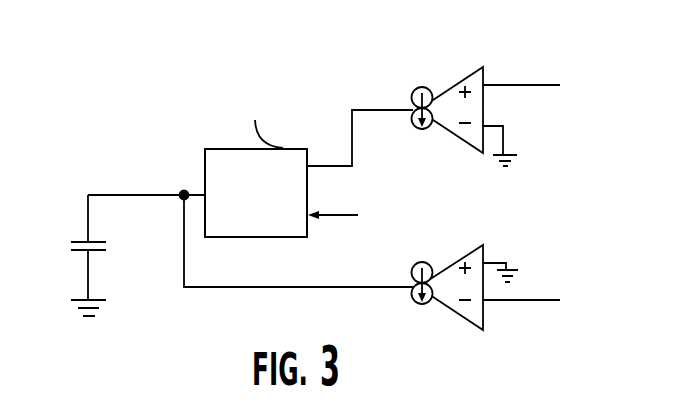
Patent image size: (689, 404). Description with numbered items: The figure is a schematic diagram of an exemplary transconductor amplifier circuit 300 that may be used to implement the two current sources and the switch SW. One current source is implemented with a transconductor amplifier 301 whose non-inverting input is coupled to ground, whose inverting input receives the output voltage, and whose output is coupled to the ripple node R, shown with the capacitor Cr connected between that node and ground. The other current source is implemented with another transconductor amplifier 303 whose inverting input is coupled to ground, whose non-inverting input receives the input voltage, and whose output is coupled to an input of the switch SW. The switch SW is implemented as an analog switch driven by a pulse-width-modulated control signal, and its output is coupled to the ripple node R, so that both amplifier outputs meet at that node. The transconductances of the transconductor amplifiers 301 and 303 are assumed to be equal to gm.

The transconductor amplifier circuit 300 is at (227, 66).
The transconductor amplifier 303 is at (448, 86).
The transconductor amplifier 301 is at (450, 262).